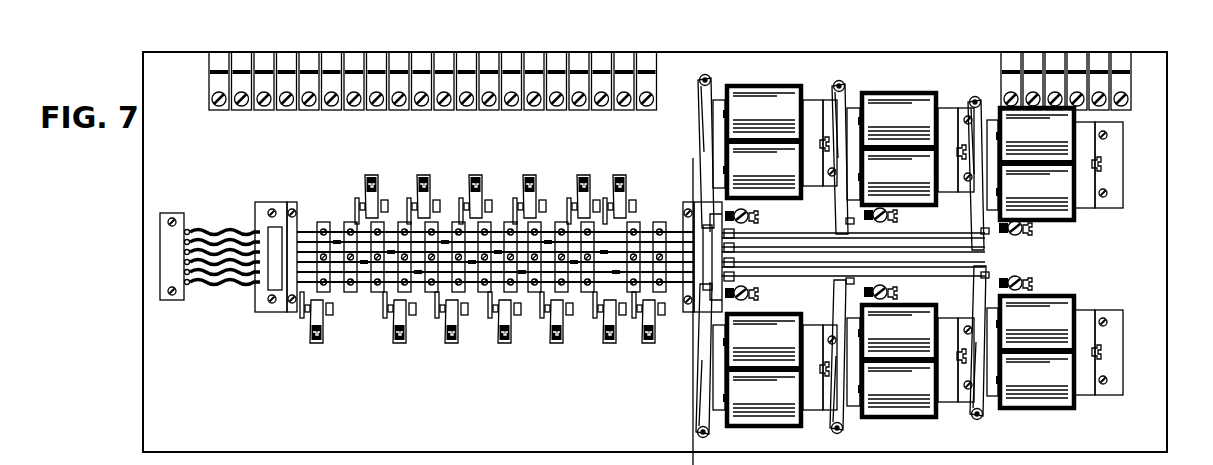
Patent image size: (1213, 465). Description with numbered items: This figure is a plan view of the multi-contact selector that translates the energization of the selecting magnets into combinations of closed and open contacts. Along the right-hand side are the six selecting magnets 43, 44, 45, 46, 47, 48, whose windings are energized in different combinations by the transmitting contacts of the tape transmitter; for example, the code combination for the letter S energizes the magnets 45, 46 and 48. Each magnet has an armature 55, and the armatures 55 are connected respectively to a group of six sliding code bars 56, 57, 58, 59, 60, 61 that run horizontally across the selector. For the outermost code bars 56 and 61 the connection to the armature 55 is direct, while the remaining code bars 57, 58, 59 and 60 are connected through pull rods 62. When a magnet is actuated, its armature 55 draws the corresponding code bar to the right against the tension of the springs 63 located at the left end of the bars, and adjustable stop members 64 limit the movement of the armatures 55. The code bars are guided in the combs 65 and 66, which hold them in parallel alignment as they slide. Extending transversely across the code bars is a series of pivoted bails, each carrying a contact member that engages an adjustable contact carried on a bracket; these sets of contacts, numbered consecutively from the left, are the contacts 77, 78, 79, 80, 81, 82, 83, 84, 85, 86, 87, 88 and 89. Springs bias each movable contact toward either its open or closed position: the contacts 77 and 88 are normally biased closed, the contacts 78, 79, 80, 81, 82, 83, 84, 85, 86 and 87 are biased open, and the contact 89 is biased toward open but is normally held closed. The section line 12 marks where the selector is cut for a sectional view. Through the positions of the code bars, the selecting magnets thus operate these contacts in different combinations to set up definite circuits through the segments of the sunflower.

The section line 12 is at (693, 165).
The selecting magnet 43 is at (750, 420).
The selecting magnet 44 is at (890, 414).
The selecting magnet 45 is at (1028, 406).
The selecting magnet 46 is at (1012, 126).
The selecting magnet 47 is at (895, 108).
The selecting magnet 48 is at (752, 102).
The armature 55 is at (700, 114).
The code bar 56 is at (272, 283).
The code bar 57 is at (272, 273).
The code bar 58 is at (272, 263).
The code bar 59 is at (274, 252).
The code bar 60 is at (276, 242).
The code bar 61 is at (279, 232).
The pull rod 62 is at (789, 246).
The spring 63 is at (205, 290).
The adjustable stop member 64 is at (752, 214).
The comb 65 is at (292, 312).
The comb 66 is at (690, 314).
The contact set 77 is at (323, 310).
The contact set 78 is at (363, 205).
The contact set 79 is at (405, 313).
The contact set 80 is at (416, 205).
The contact set 81 is at (443, 319).
The contact set 82 is at (468, 205).
The contact set 83 is at (493, 312).
The contact set 84 is at (522, 205).
The contact set 85 is at (547, 312).
The contact set 86 is at (575, 205).
The contact set 87 is at (599, 312).
The contact set 88 is at (631, 206).
The contact set 89 is at (657, 312).